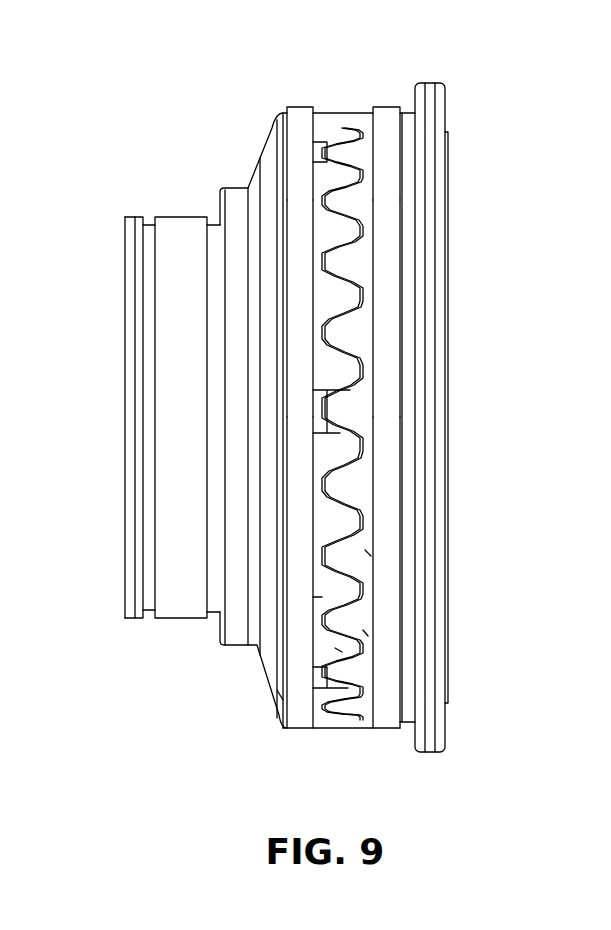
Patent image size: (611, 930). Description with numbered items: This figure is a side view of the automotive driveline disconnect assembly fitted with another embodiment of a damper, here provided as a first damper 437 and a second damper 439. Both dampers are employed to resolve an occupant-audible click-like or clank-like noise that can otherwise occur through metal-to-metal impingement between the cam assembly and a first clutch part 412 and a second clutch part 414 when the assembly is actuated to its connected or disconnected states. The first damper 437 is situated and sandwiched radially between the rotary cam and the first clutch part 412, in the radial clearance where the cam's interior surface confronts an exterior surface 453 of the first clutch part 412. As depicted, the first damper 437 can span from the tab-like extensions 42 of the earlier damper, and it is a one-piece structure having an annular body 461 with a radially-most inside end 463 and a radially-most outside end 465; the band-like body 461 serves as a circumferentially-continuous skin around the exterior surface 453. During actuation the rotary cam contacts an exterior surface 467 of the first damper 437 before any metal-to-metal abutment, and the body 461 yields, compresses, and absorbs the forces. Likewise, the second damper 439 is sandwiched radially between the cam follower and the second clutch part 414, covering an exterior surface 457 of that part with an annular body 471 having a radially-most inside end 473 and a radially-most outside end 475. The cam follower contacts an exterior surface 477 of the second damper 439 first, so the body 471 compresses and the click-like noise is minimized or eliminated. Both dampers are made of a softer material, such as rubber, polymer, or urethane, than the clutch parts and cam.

The tab-like extensions 42 is at (320, 152).
The first clutch part 412 is at (262, 149).
The second clutch part 414 is at (446, 183).
The first damper 437 is at (300, 108).
The second damper 439 is at (386, 108).
The exterior surface 453 is at (338, 650).
The exterior surface 457 is at (365, 633).
The annular body 461 is at (300, 562).
The radially-most inside end 463 is at (322, 597).
The radially-most outside end 465 is at (277, 695).
The exterior surface 467 is at (300, 258).
The annular body 471 is at (388, 445).
The radially-most inside end 473 is at (368, 556).
The radially-most outside end 475 is at (402, 633).
The exterior surface 477 is at (388, 298).